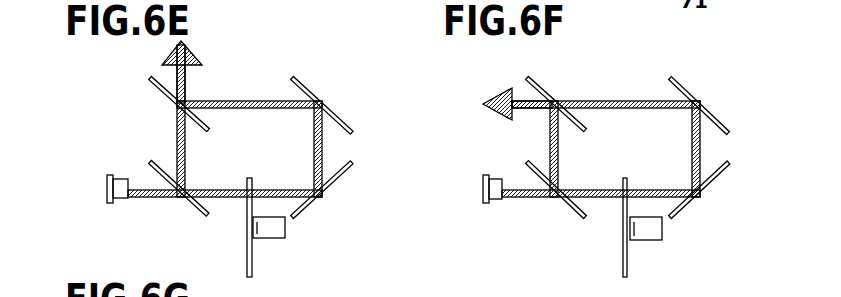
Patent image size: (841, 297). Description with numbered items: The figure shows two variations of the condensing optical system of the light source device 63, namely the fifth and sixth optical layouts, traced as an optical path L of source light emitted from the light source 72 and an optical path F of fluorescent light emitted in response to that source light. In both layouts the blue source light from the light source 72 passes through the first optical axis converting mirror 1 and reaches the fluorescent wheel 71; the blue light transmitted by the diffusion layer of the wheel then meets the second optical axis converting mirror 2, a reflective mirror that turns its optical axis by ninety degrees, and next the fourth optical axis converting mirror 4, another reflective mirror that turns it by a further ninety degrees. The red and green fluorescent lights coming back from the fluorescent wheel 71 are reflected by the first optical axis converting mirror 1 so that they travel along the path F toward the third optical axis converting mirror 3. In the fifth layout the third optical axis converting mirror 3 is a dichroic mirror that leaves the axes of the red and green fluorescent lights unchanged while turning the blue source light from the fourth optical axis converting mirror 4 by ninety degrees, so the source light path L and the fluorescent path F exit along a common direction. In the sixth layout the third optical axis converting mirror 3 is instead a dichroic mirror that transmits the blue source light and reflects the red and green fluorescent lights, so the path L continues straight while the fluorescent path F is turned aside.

In FIG. 6E, the first optical axis converting mirror 1 is at (187, 202).
In FIG. 6F, the first optical axis converting mirror 1 is at (560, 197).
In FIG. 6E, the second optical axis converting mirror 2 is at (337, 178).
In FIG. 6F, the second optical axis converting mirror 2 is at (712, 183).
In FIG. 6E, the third optical axis converting mirror 3 is at (162, 90).
In FIG. 6F, the third optical axis converting mirror 3 is at (545, 97).
In FIG. 6E, the fourth optical axis converting mirror 4 is at (338, 120).
In FIG. 6F, the fourth optical axis converting mirror 4 is at (712, 115).
In FIG. 6E, the light source device 63 is at (128, 140).
In FIG. 6F, the light source device 63 is at (480, 132).
In FIG. 6E, the fluorescent wheel 71 is at (260, 263).
In FIG. 6F, the fluorescent wheel 71 is at (636, 264).
In FIG. 6E, the light source 72 is at (120, 190).
In FIG. 6F, the light source 72 is at (496, 190).
In FIG. 6E, the optical path of source light L is at (241, 101).
In FIG. 6F, the optical path of source light L is at (631, 100).
In FIG. 6E, the optical path of fluorescent light F is at (177, 82).
In FIG. 6F, the optical path of fluorescent light F is at (550, 140).